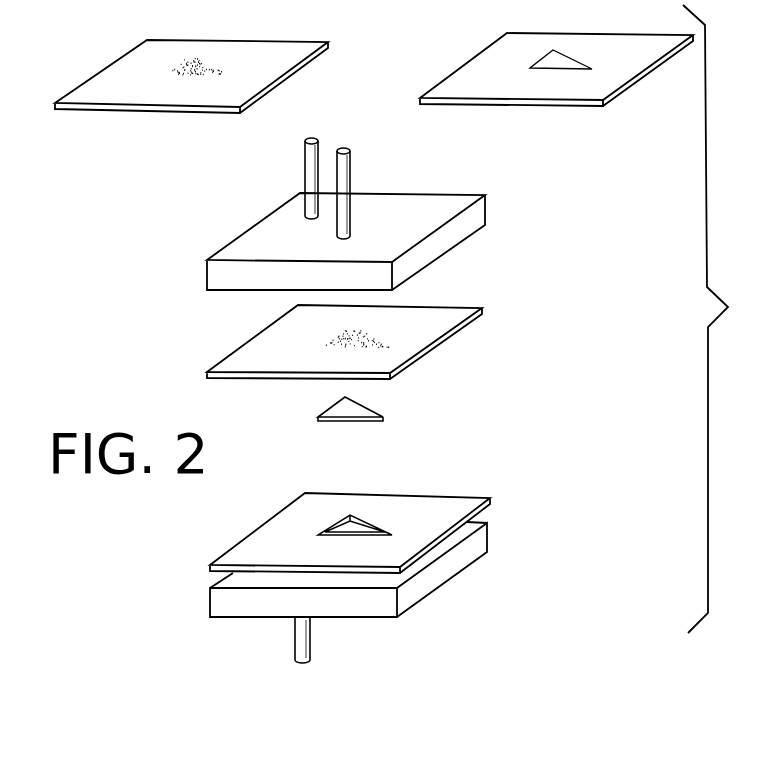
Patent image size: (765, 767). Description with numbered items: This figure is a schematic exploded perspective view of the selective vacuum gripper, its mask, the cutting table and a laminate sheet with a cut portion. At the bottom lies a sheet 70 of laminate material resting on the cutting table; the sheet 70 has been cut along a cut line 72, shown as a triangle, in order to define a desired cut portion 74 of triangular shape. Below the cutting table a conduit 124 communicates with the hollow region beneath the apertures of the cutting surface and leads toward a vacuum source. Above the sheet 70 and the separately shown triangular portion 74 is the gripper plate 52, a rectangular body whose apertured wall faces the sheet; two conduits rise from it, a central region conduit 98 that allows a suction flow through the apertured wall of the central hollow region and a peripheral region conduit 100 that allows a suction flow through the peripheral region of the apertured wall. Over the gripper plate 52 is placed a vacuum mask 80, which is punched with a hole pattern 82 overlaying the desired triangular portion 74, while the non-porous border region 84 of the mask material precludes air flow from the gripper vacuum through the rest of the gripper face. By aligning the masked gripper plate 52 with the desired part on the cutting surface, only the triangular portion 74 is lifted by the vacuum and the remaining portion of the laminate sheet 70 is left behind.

The vacuum mask 80 is at (190, 76).
The hole pattern 82 is at (198, 68).
The non-porous border region 84 is at (160, 97).
The peripheral region conduit 100 is at (308, 160).
The central region conduit 98 is at (345, 173).
The gripper plate 52 is at (468, 222).
The cut portion 74 is at (360, 413).
The cut line 72 is at (362, 528).
The laminate sheet 70 is at (387, 560).
The conduit 124 is at (305, 640).